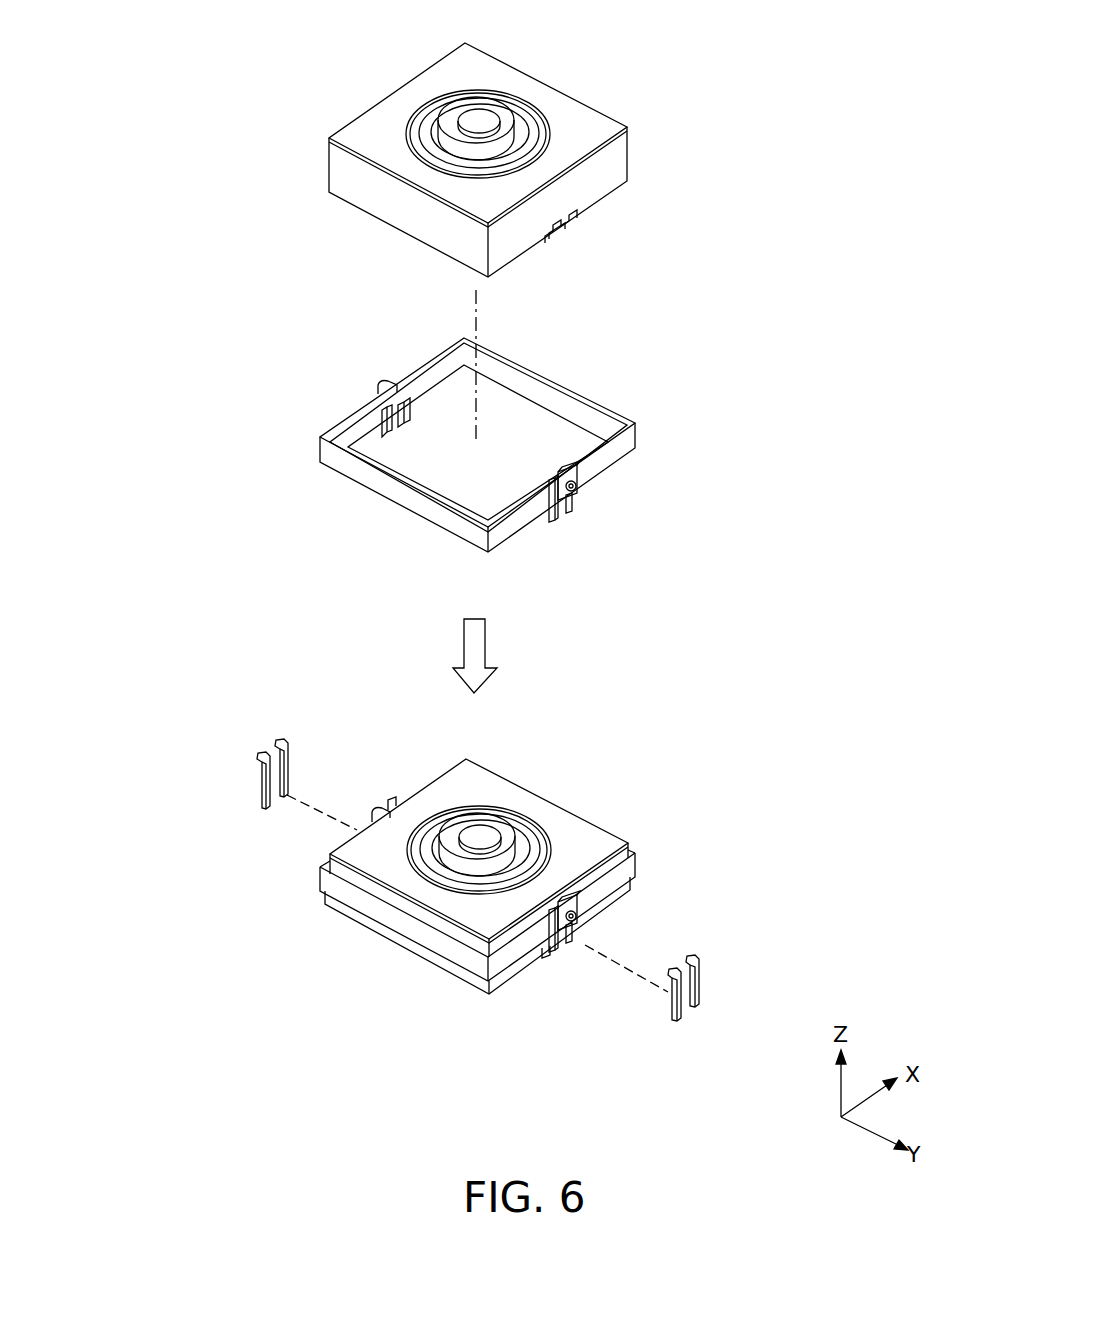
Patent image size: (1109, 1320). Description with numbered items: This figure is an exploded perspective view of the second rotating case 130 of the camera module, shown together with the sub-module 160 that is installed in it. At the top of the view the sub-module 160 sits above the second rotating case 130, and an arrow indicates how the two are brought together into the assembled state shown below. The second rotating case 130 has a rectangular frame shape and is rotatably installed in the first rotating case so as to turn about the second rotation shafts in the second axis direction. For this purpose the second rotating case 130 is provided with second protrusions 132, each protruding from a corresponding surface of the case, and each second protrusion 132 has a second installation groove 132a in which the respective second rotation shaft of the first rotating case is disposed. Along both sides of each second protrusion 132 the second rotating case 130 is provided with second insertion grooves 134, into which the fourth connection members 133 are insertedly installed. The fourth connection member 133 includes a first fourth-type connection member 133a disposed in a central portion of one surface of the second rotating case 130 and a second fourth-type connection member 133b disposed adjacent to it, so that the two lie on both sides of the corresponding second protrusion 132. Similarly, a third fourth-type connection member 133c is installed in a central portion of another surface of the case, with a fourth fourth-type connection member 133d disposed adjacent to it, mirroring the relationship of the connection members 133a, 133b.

The sub-module 160 is at (580, 115).
The second rotating case 130 is at (625, 442).
The second protrusion 132 is at (575, 472).
The second installation groove 132a is at (580, 490).
The second insertion groove 134 is at (557, 515).
The fourth connection member 133 is at (195, 950).
The 4-1 connection member 133a is at (682, 1013).
The 4-2 connection member 133b is at (700, 975).
The 4-3 connection member 133c is at (277, 742).
The 4-4 connection member 133d is at (258, 767).